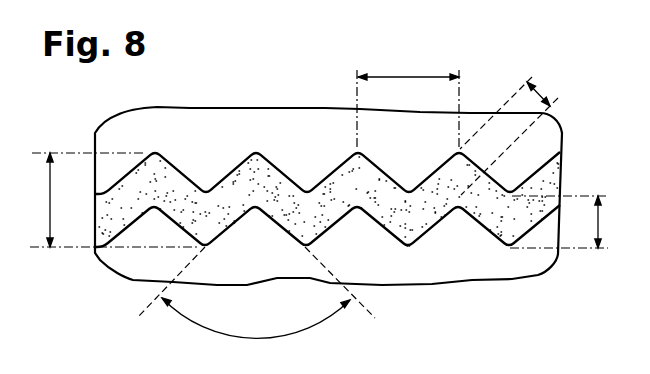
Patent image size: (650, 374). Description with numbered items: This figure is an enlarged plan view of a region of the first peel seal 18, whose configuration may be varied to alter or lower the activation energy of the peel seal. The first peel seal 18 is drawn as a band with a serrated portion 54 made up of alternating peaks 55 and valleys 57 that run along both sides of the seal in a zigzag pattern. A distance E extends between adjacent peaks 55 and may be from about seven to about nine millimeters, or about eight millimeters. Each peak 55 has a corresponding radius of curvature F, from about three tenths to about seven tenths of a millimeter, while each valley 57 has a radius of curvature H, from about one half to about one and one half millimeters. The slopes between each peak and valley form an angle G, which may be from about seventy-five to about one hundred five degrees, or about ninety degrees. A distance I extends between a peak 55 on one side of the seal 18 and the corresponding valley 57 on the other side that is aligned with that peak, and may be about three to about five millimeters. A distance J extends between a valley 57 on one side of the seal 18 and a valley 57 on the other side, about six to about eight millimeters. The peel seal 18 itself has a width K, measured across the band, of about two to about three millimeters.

The first peel seal 18 is at (326, 160).
The serrated portion 54 is at (303, 119).
The peaks 55 is at (251, 145).
The valleys 57 is at (195, 181).
The radius of curvature H is at (202, 188).
The radius of curvature F is at (256, 146).
The distance E is at (410, 77).
The width K is at (540, 96).
The distance J is at (49, 200).
The distance I is at (598, 224).
The angle G is at (280, 338).